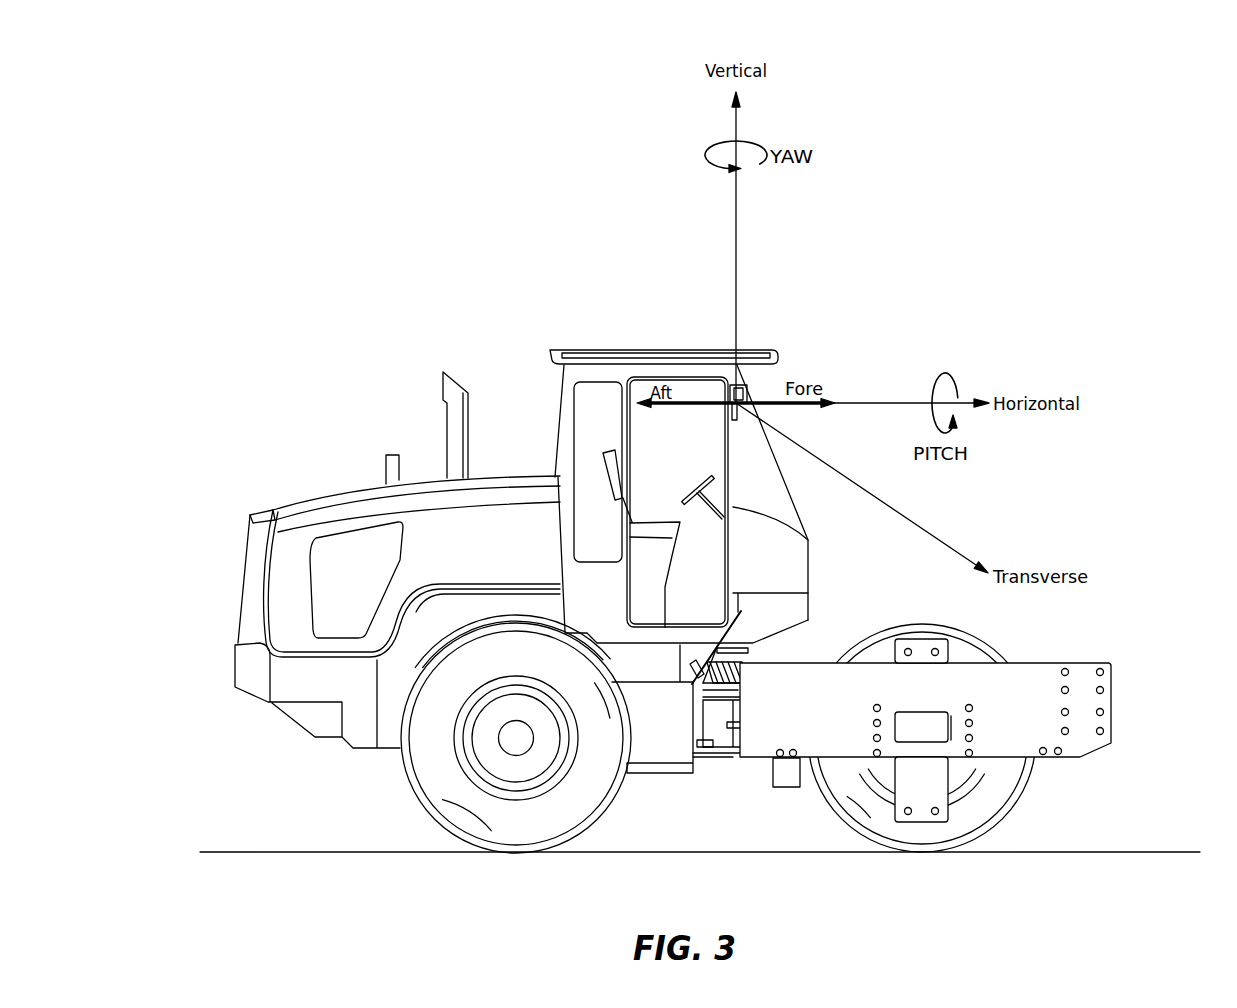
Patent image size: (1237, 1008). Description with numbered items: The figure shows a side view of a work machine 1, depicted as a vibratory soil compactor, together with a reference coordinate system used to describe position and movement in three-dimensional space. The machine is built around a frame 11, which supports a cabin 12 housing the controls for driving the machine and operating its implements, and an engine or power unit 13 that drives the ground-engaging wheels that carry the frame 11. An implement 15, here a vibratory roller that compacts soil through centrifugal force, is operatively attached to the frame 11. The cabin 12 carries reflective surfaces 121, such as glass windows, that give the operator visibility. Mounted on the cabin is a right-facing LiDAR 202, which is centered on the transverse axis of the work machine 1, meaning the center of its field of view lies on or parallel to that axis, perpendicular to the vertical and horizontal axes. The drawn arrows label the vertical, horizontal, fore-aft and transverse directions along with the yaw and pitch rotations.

The work machine 1 is at (1032, 322).
The frame 11 is at (391, 723).
The cabin 12 is at (793, 563).
The reflective surface 121 is at (646, 440).
The power unit 13 is at (284, 558).
The implement 15 is at (1085, 707).
The right-facing LiDAR 202 is at (784, 363).